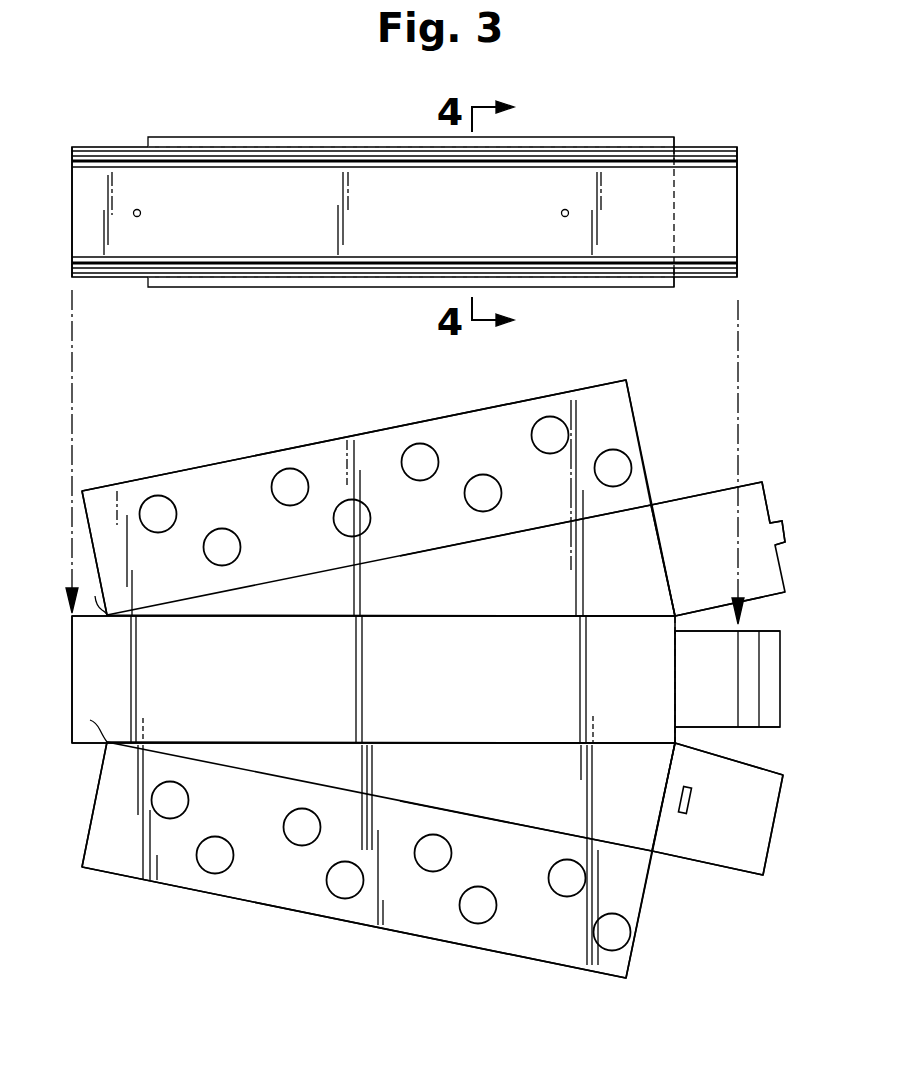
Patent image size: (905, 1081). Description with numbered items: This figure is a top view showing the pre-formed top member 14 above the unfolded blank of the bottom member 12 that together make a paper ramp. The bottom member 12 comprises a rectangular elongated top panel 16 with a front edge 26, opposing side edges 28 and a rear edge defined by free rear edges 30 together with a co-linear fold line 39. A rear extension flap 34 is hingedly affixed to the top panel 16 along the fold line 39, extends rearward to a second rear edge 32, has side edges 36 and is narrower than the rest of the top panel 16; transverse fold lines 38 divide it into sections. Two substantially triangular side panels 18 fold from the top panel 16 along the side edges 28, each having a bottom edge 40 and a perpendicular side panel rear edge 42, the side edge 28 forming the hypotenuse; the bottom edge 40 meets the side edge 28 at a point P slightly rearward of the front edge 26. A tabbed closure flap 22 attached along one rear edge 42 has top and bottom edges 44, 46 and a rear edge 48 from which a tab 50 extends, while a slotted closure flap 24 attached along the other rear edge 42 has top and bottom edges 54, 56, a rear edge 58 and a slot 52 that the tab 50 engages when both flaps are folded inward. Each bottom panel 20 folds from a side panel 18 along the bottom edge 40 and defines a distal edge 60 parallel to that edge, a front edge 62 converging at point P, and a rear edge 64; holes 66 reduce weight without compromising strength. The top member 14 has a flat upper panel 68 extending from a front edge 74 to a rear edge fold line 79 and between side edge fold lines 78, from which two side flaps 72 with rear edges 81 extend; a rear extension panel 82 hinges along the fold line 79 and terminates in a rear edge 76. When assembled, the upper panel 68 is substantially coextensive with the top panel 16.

The bottom member 12 is at (782, 686).
The top member 14 is at (740, 212).
The top panel 16 is at (441, 691).
The side panels 18 is at (454, 594).
The bottom panels 20 is at (401, 521).
The tabbed closure flap 22 is at (695, 559).
The slotted closure flap 24 is at (710, 843).
The front edge 26 is at (72, 676).
The side edges 28 is at (376, 616).
The free rear edges 30 is at (678, 733).
The second rear edge 32 is at (780, 660).
The rear extension flap 34 is at (728, 697).
The side edges 36 is at (750, 630).
The fold lines 38 is at (738, 656).
The fold line 39 is at (672, 696).
The bottom edge 40 is at (517, 533).
The side panel rear edge 42 is at (661, 571).
The top edge 44 is at (762, 586).
The bottom edge 46 is at (696, 488).
The rear edge 48 is at (768, 502).
The tab 50 is at (785, 531).
The slot 52 is at (690, 798).
The top edge 54 is at (768, 766).
The bottom edge 56 is at (718, 872).
The rear edge 58 is at (776, 824).
The distal edge 60 is at (314, 440).
The front edge 62 is at (92, 565).
The rear edge 64 is at (633, 393).
The holes 66 is at (176, 505).
The upper panel 68 is at (394, 224).
The side flaps 72 is at (624, 138).
The front edge 74 is at (72, 207).
The rear edge 76 is at (737, 190).
The fold lines 78 is at (108, 146).
The rear edge fold line 79 is at (673, 224).
The rear edges 81 is at (674, 140).
The rear extension panel 82 is at (717, 234).